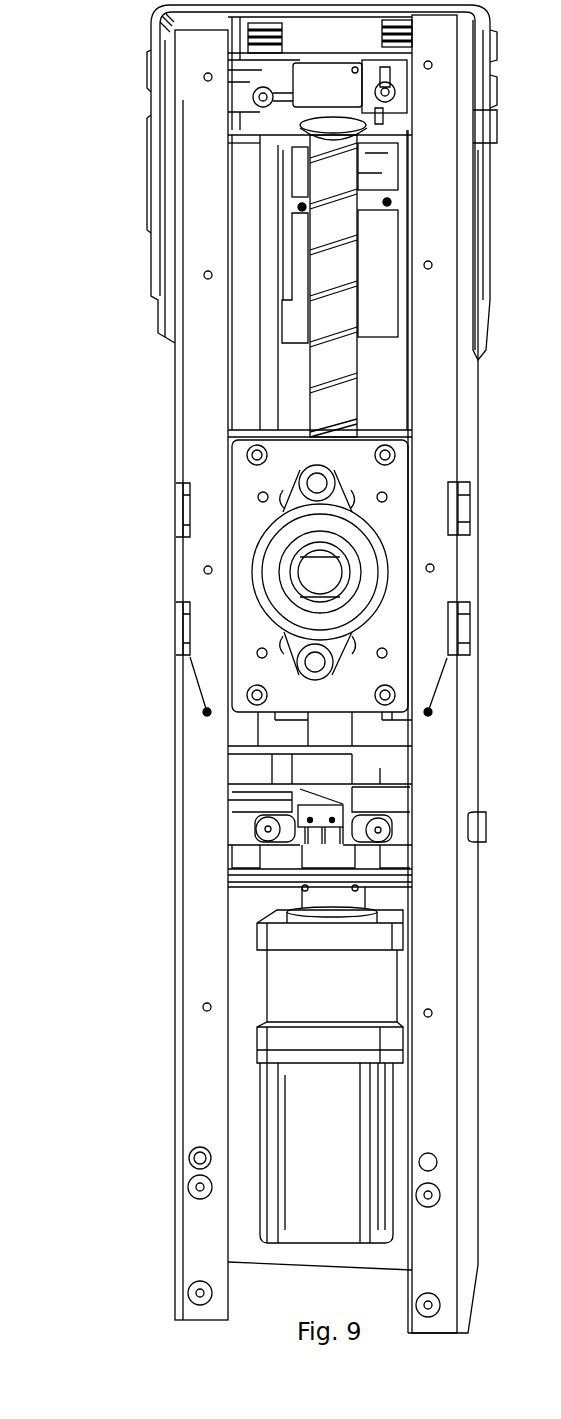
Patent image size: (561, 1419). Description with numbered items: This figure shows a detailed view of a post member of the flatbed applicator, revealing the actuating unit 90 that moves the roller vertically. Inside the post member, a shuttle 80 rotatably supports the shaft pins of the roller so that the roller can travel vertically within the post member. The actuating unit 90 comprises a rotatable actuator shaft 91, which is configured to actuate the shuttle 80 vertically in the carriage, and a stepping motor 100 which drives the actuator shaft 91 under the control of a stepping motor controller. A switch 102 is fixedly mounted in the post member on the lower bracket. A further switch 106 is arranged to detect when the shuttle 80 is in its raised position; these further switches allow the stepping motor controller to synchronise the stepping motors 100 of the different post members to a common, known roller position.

The further switch 106 is at (325, 85).
The actuator shaft 91 is at (323, 278).
The shuttle 80 is at (248, 628).
The switch 102 is at (313, 813).
The actuating unit 90 is at (224, 1064).
The stepping motor 100 is at (343, 1140).